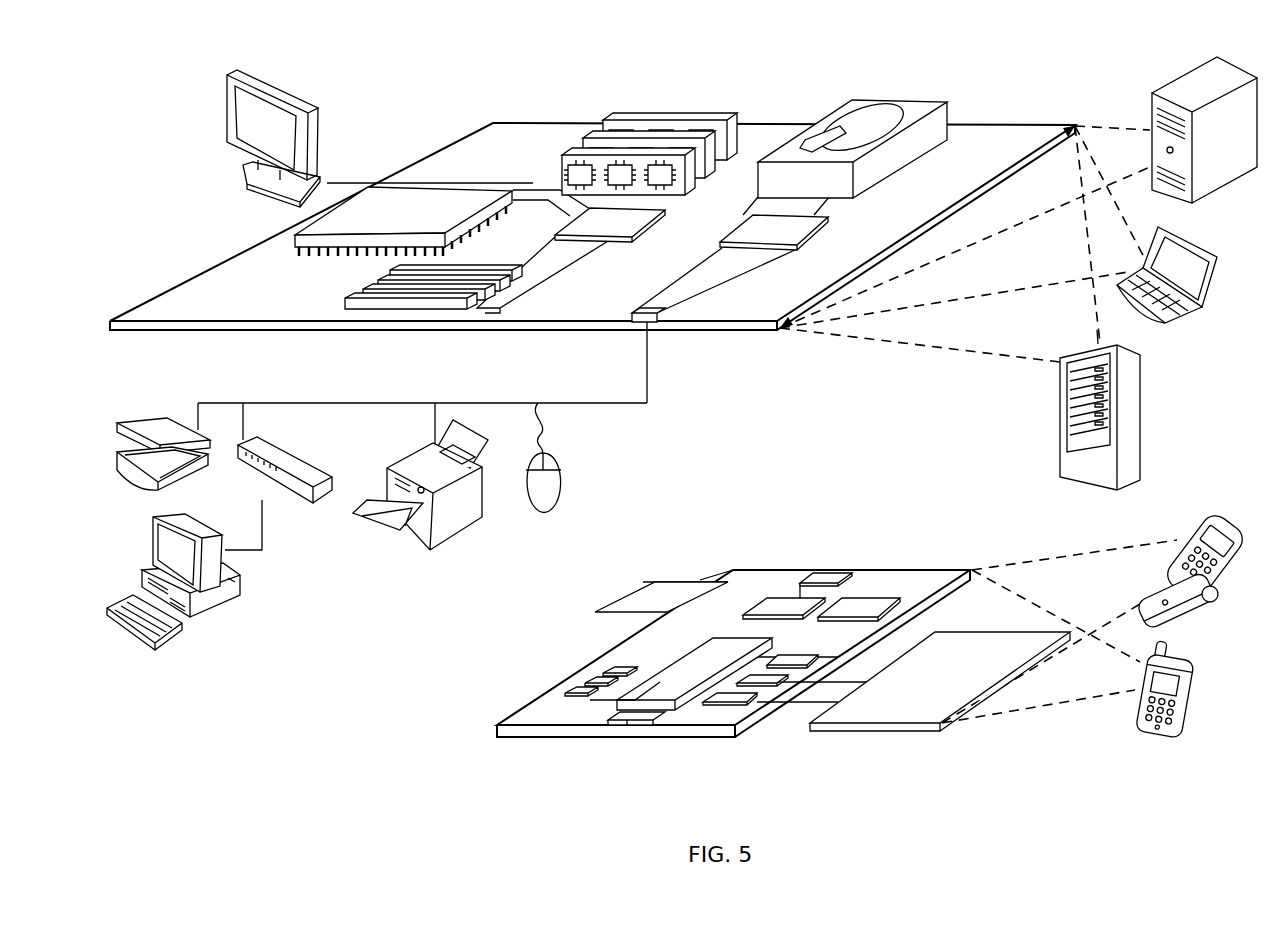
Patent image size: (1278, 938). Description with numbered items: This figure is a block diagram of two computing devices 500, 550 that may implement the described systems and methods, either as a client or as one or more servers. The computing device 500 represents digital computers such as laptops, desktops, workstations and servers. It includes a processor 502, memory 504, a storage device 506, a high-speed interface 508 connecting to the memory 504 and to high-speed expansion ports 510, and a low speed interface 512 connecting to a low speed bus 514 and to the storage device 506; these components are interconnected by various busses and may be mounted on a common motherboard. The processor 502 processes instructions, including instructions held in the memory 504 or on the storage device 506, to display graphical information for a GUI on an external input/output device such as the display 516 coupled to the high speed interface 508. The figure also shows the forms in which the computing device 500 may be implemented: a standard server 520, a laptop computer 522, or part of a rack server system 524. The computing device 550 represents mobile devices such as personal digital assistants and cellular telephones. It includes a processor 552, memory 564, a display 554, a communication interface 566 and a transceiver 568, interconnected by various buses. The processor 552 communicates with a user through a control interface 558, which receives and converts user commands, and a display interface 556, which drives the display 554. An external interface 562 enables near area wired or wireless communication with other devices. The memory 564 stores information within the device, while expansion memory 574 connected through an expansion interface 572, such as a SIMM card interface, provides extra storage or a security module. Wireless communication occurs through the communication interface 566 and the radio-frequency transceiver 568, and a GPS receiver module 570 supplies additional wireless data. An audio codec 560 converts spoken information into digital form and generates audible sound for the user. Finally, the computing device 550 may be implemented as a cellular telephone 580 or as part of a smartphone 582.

The computing device 500 is at (420, 93).
The processor 502 is at (300, 238).
The memory 504 is at (613, 113).
The storage device 506 is at (840, 103).
The high-speed interface 508 is at (588, 222).
The high-speed expansion ports 510 is at (363, 297).
The low speed interface 512 is at (757, 223).
The low speed bus 514 is at (687, 330).
The display 516 is at (221, 73).
The standard server 520 is at (1152, 107).
The laptop computer 522 is at (1210, 256).
The rack server system 524 is at (1060, 438).
The computing device 550 is at (468, 744).
The processor 552 is at (668, 693).
The display 554 is at (898, 710).
The display interface 556 is at (733, 700).
The control interface 558 is at (767, 680).
The audio codec 560 is at (792, 655).
The external interface 562 is at (637, 727).
The memory 564 is at (590, 693).
The communication interface 566 is at (785, 605).
The transceiver 568 is at (863, 603).
The GPS receiver module 570 is at (830, 577).
The expansion interface 572 is at (715, 582).
The expansion memory 574 is at (643, 582).
The cellular telephone 580 is at (1182, 518).
The smartphone 582 is at (1137, 688).